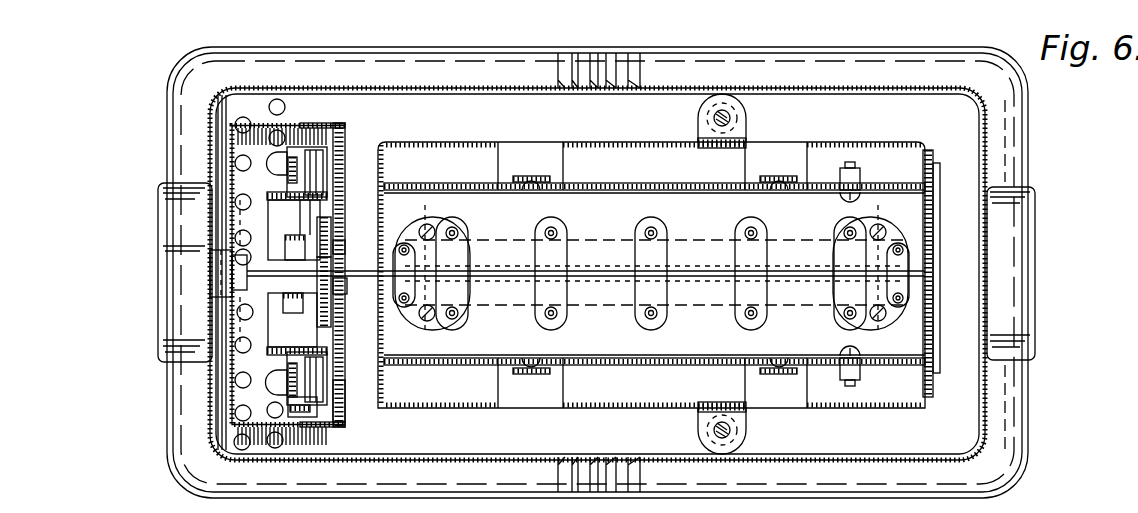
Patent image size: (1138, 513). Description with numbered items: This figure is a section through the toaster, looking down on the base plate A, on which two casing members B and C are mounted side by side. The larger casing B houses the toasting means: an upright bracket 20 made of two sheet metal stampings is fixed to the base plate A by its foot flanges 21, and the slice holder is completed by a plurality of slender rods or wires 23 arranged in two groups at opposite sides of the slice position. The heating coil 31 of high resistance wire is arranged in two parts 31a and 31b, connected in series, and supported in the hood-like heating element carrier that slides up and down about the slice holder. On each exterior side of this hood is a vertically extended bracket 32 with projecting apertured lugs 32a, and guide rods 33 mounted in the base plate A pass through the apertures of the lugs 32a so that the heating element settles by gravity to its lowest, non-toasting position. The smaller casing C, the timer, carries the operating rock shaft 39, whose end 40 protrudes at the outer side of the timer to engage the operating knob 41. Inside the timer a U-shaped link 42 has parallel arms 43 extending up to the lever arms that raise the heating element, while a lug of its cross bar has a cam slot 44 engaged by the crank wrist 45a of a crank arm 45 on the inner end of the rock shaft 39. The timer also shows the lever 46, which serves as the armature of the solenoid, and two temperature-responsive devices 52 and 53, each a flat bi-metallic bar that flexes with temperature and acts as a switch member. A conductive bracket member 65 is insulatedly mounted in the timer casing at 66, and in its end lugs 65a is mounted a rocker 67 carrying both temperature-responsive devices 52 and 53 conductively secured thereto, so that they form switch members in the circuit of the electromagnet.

The base plate A is at (1014, 434).
The casing member B is at (893, 407).
The casing member C is at (265, 122).
The upright bracket 20 is at (507, 280).
The foot flanges 21 is at (423, 222).
The slender rods or wires 23 is at (547, 231).
The heating coil 31 is at (732, 189).
The heating coil part 31a is at (683, 183).
The heating coil part 31b is at (710, 364).
The vertically extended bracket 32 is at (700, 135).
The apertured lugs 32a is at (746, 112).
The guide rods 33 is at (726, 112).
The rock shaft 39 is at (268, 300).
The protruding end of rock shaft 40 is at (230, 302).
The operating knob 41 is at (196, 293).
The U-shaped link 42 is at (339, 400).
The parallel arms 43 is at (347, 142).
The cam slot 44 is at (342, 246).
The crank arm 45 is at (326, 301).
The crank wrist 45a is at (343, 258).
The lever 46 is at (335, 293).
The temperature-responsive device 52 is at (272, 163).
The temperature-responsive device 53 is at (279, 388).
The conductive bracket member 65 is at (337, 127).
The end lugs 65a is at (307, 505).
The insulated mounting 66 is at (330, 172).
The rocker 67 is at (325, 156).